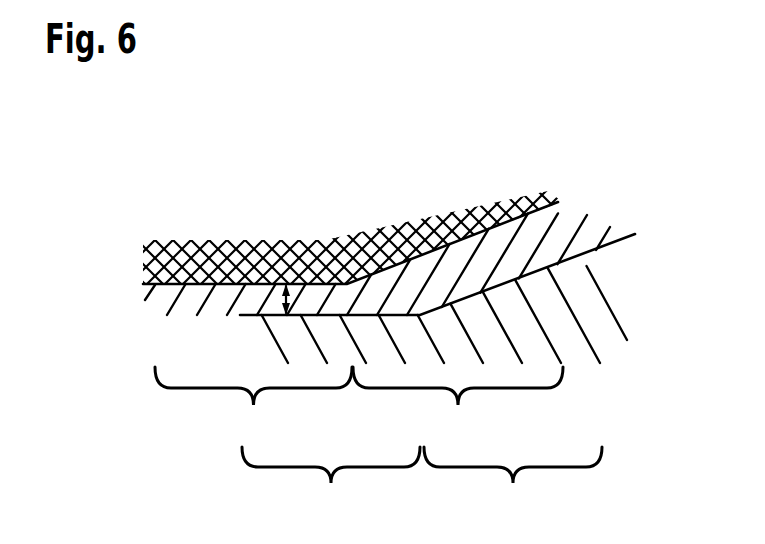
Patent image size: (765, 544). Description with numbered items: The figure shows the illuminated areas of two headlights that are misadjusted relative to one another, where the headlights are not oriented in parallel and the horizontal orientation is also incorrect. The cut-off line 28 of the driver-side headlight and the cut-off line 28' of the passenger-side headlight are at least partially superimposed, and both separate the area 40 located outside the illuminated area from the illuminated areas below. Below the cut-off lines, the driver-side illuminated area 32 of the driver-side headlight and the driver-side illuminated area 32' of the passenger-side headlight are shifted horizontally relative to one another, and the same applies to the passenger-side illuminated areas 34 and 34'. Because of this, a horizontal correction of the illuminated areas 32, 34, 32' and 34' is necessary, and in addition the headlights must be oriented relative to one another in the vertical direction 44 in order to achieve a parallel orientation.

The area located outside the illuminated area 40 is at (347, 220).
The vertical direction 44 is at (287, 296).
The cut-off line 28 is at (399, 251).
The cut-off line 28' is at (470, 298).
The driver-side illuminated area 32 is at (253, 402).
The passenger-side illuminated area 34 is at (458, 402).
The driver-side illuminated area 32' is at (331, 482).
The passenger-side illuminated area 34' is at (513, 481).